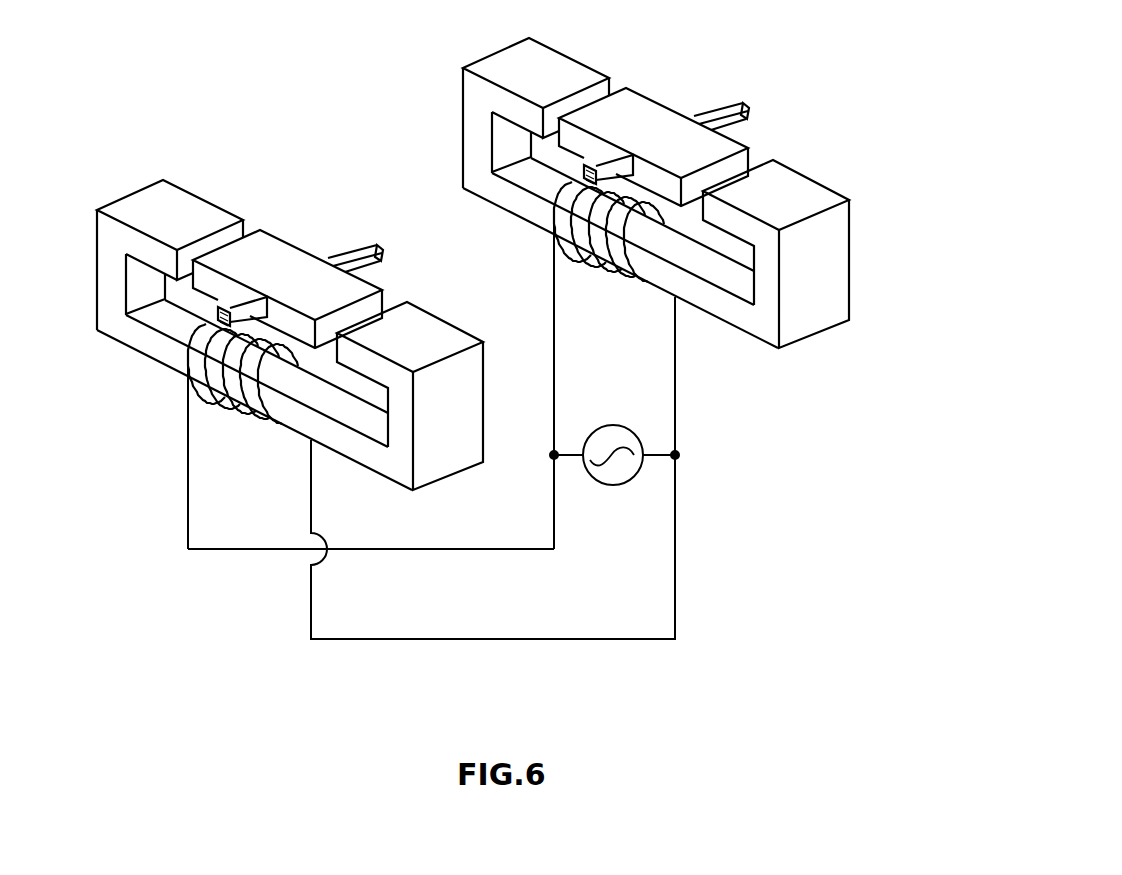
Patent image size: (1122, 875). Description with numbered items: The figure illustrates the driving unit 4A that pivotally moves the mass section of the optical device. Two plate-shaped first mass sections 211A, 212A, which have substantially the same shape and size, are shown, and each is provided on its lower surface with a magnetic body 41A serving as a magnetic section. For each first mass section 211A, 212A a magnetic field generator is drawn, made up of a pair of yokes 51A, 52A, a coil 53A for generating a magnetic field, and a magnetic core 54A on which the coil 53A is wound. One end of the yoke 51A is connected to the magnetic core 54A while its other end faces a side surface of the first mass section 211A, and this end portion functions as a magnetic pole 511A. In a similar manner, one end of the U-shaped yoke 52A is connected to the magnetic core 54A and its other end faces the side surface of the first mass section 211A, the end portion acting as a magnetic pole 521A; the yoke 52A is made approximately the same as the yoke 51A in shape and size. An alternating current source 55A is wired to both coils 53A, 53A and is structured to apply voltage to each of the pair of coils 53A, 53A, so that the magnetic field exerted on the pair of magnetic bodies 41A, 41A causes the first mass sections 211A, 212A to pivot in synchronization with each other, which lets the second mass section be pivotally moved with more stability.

The driving unit 4A is at (842, 69).
The magnetic body 41A is at (318, 330).
The first mass section 211A is at (286, 263).
The first mass section 212A is at (652, 121).
The yoke 51A is at (466, 393).
The magnetic pole 511A is at (418, 328).
The yoke 52A is at (113, 275).
The magnetic pole 521A is at (190, 213).
The coil 53A is at (180, 333).
The magnetic core 54A is at (268, 374).
The alternating current source 55A is at (613, 486).